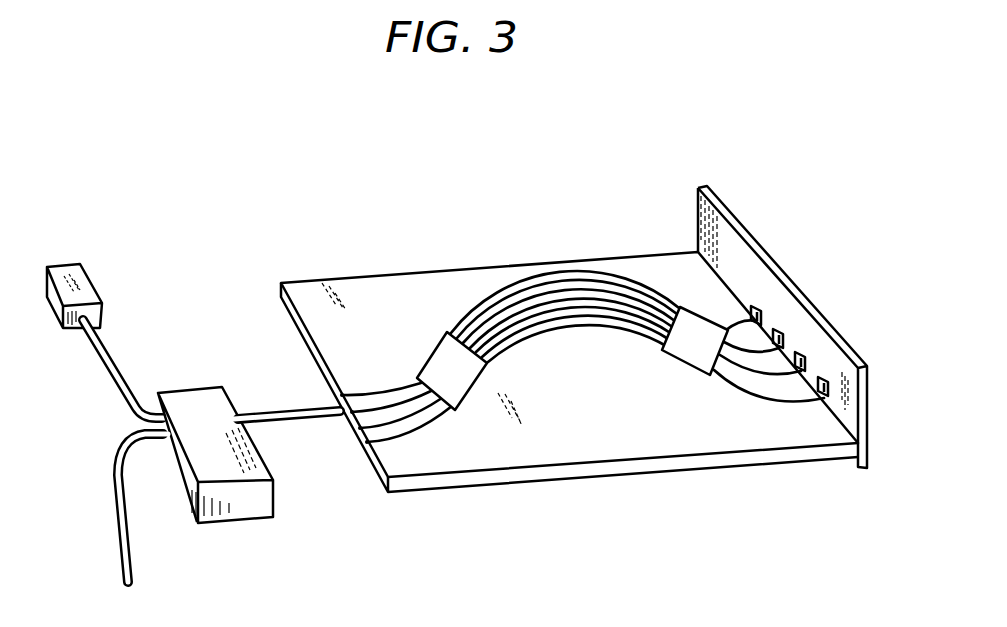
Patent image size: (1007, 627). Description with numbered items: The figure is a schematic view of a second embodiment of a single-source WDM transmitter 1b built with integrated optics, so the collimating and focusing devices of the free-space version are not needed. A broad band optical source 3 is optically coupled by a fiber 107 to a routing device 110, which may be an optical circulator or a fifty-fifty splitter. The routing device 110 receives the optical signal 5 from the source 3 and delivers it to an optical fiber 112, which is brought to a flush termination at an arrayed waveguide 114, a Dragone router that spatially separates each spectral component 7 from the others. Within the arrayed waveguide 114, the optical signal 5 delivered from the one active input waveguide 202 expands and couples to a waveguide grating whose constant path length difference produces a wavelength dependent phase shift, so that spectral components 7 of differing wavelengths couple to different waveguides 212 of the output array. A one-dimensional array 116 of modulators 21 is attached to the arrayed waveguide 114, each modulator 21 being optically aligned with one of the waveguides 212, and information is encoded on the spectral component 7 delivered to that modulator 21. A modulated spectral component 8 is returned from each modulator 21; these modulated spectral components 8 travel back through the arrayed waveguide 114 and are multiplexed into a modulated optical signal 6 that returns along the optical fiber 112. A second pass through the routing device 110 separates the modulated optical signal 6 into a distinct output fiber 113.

The WDM transmitter 1b is at (243, 196).
The broad band optical source 3 is at (82, 281).
The optical signal 5 is at (128, 356).
The modulated optical signal 6 is at (107, 484).
The fiber 107 is at (107, 373).
The routing device 110 is at (226, 446).
The optical fiber 112 is at (257, 413).
The output fiber 113 is at (115, 557).
The arrayed waveguide 114 is at (393, 283).
The 1-D array of modulators 116 is at (810, 337).
The waveguides of the input array 202 is at (370, 393).
The waveguides of the output array 212 is at (757, 402).
The modulator 21 is at (757, 314).
The spectral components 7 is at (660, 286).
The modulated spectral components 8 is at (458, 316).